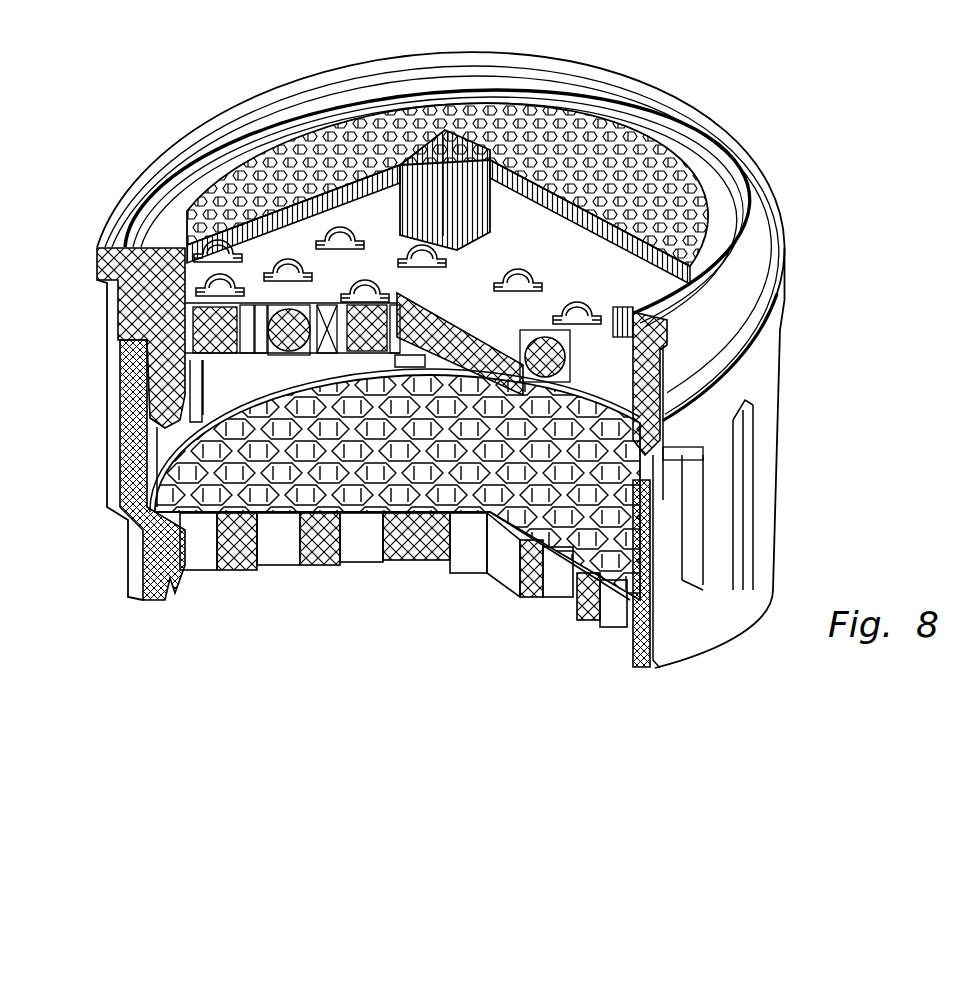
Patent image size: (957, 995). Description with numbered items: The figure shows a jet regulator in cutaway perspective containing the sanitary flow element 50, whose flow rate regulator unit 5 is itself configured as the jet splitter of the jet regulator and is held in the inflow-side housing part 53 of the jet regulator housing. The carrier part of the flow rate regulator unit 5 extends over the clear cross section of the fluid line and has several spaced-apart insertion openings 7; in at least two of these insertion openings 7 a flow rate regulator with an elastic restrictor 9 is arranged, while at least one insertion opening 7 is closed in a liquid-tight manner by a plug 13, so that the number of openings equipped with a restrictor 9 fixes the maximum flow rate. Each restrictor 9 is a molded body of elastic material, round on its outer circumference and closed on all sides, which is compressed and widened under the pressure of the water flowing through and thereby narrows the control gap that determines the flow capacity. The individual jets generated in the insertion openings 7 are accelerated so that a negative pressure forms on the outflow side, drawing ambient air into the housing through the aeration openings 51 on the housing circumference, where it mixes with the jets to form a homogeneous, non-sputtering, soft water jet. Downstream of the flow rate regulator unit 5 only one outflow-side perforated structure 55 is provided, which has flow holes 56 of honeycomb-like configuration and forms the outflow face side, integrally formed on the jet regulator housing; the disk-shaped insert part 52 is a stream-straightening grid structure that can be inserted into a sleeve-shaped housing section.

The flow rate regulator unit 5 is at (455, 238).
The insertion openings 7 is at (403, 312).
The restrictor 9 is at (293, 260).
The plug 13 is at (222, 311).
The flow element 50 is at (746, 88).
The aeration openings 51 is at (750, 412).
The disk-shaped insert part 52 is at (712, 377).
The inflow-side housing part 53 is at (706, 627).
The perforated structure 55 is at (430, 538).
The flow holes 56 is at (343, 497).